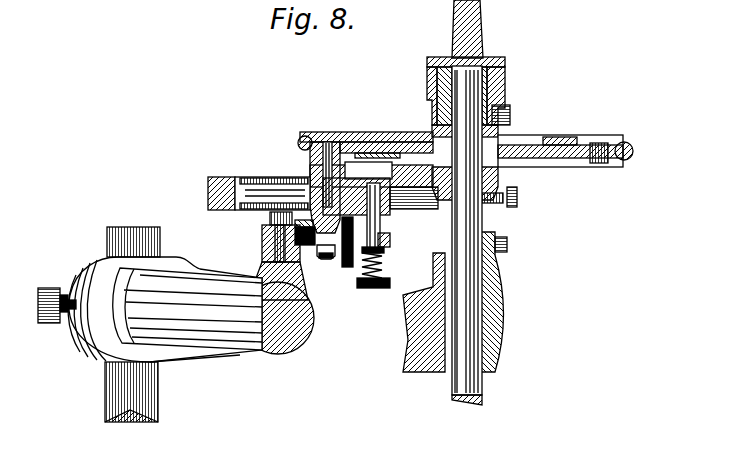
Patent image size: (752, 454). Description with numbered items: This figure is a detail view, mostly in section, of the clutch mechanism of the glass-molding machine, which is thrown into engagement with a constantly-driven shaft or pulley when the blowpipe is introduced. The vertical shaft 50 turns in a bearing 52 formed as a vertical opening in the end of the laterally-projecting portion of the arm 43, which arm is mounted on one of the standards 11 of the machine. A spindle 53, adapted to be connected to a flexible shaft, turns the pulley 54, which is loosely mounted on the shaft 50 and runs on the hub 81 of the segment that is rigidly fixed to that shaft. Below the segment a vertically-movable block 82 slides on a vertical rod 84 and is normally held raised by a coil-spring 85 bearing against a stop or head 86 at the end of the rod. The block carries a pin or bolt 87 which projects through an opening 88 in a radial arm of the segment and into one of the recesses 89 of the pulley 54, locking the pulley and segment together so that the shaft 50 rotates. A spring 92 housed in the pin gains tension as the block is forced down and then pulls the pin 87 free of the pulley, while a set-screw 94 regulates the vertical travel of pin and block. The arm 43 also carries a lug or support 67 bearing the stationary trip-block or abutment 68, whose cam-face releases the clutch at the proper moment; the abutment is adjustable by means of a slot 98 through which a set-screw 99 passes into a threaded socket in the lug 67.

The standard 11 is at (158, 394).
The arm 43 is at (410, 345).
The shaft 50 is at (470, 345).
The bearing 52 is at (505, 290).
The spindle 53 is at (483, 32).
The pulley 54 is at (549, 139).
The lug or support 67 is at (262, 272).
The trip-block or abutment 68 is at (262, 240).
The hub 81 is at (498, 173).
The block 82 is at (390, 243).
The rod 84 is at (383, 225).
The coil-spring 85 is at (383, 266).
The stop or head 86 is at (368, 288).
The pin or bolt 87 is at (310, 175).
The opening 88 is at (345, 175).
The recess 89 is at (335, 140).
The spring 92 is at (325, 260).
The set-screw 94 is at (347, 270).
The slot 98 is at (268, 218).
The set-screw 99 is at (262, 250).